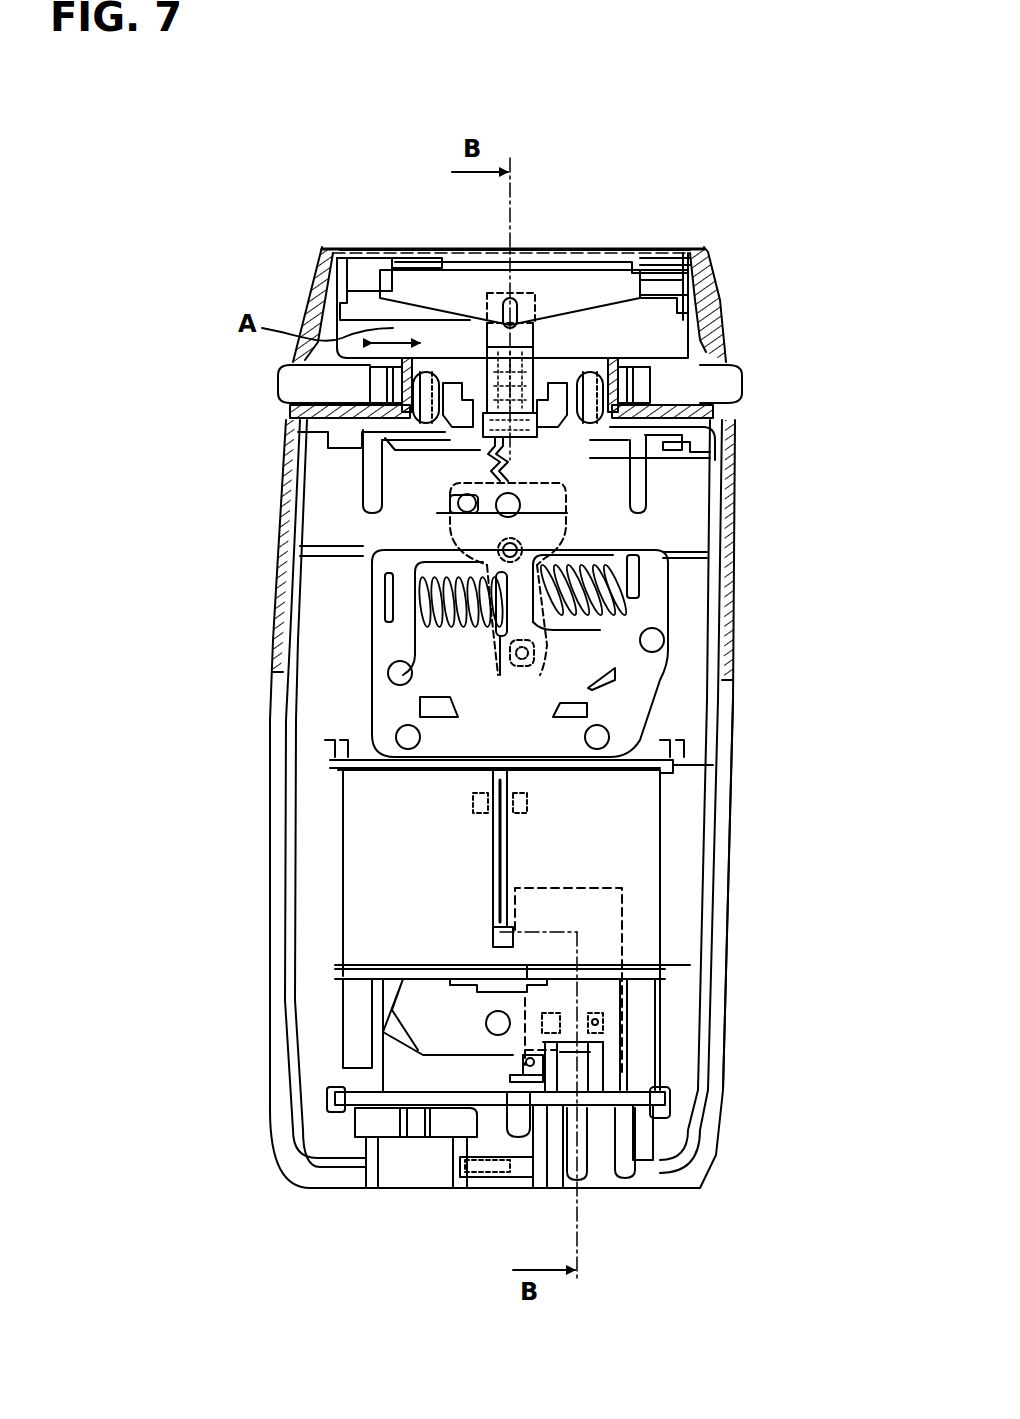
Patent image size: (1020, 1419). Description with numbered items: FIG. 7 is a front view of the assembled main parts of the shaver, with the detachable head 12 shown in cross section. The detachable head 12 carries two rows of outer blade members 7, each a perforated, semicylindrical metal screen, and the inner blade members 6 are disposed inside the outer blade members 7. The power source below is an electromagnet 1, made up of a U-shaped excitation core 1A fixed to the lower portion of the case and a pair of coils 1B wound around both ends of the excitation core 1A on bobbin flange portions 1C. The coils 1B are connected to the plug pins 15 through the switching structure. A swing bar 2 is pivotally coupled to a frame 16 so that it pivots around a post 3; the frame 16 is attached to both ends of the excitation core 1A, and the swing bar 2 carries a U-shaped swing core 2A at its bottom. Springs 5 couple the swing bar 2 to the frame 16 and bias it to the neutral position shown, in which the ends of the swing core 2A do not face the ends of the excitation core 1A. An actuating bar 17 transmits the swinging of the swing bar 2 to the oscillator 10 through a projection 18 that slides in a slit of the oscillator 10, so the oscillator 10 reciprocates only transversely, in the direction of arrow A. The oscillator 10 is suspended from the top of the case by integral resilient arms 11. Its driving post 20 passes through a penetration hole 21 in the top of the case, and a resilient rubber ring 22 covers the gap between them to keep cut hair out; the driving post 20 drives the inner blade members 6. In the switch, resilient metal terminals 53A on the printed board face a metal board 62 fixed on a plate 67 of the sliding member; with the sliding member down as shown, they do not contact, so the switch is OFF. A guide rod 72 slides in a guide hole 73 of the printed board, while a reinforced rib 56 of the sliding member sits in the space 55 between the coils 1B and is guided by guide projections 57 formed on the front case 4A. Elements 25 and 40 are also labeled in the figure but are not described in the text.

The electromagnet 1 is at (672, 871).
The excitation core 1A is at (585, 708).
The coils 1B is at (343, 893).
The bobbin flange portions 1C is at (395, 773).
The swing bar 2 is at (597, 650).
The swing core 2A is at (613, 680).
The post 3 is at (568, 500).
The front case 4A is at (723, 975).
The springs 5 is at (440, 597).
The inner blade members 6 is at (633, 283).
The outer blade members 7 is at (366, 247).
The oscillator 10 is at (402, 467).
The resilient arms 11 is at (648, 485).
The detachable head 12 is at (622, 237).
The plug pins 15 is at (628, 1157).
The frame 16 is at (650, 583).
The actuating bar 17 is at (514, 479).
The projection 18 is at (486, 460).
The driving post 20 is at (525, 440).
The penetration hole 21 is at (610, 400).
The resilient rubber ring 22 is at (555, 432).
The eccentric pin 25 is at (460, 496).
The bottom cover 40 is at (390, 1180).
The resilient metal terminals 53A is at (550, 1077).
The space 55 is at (498, 855).
The reinforced rib 56 is at (490, 885).
The guide projections 57 is at (484, 803).
The metal board 62 is at (600, 1018).
The plate 67 is at (613, 920).
The guide rod 72 is at (514, 1152).
The guide hole 73 is at (502, 1145).